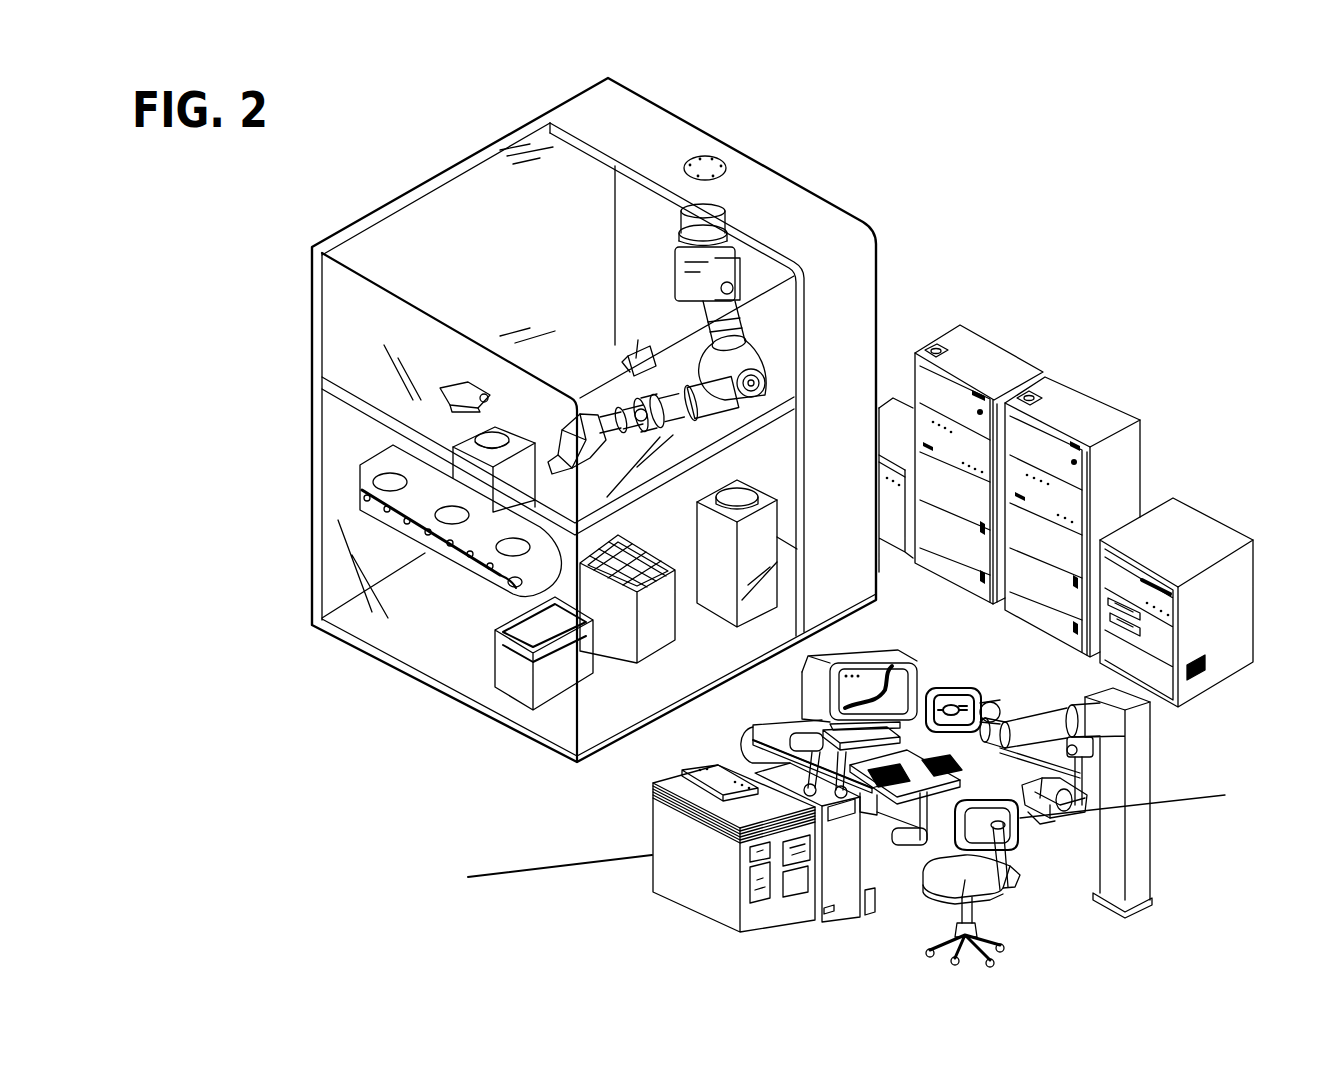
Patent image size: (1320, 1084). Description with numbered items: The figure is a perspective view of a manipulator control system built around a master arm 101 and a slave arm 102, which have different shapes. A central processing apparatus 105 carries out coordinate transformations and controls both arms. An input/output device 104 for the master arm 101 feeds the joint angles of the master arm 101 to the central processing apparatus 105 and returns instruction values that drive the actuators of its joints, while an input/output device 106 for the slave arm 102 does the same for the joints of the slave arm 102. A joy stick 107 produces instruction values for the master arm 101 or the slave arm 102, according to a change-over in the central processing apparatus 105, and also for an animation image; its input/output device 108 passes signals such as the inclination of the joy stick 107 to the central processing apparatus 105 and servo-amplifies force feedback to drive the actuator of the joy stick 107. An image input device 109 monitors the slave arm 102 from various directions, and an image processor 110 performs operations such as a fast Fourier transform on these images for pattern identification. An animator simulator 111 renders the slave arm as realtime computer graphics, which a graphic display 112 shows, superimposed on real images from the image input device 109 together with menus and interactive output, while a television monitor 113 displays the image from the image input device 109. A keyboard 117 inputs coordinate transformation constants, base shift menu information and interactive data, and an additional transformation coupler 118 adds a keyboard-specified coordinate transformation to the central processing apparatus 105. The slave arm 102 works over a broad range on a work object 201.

The master arm 101 is at (1082, 795).
The slave arm 102 is at (750, 338).
The input/output device for the master arm 104 is at (1098, 407).
The central processing apparatus 105 is at (1190, 515).
The input/output device for the slave arm 106 is at (1012, 365).
The joy stick 107 is at (753, 727).
The input/output device for the joy stick 108 is at (843, 903).
The image input device 109 is at (640, 350).
The image processor 110 is at (893, 417).
The animator simulator 111 is at (688, 882).
The graphic display 112 is at (867, 656).
The television monitor 113 is at (975, 674).
The keyboard 117 is at (1030, 797).
The additional transformation coupler 118 is at (702, 767).
The work object 201 is at (492, 437).